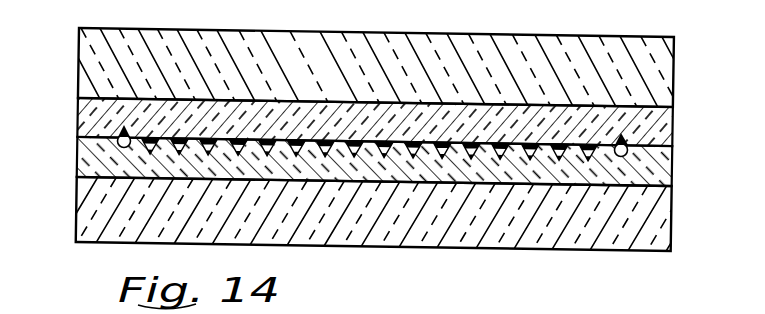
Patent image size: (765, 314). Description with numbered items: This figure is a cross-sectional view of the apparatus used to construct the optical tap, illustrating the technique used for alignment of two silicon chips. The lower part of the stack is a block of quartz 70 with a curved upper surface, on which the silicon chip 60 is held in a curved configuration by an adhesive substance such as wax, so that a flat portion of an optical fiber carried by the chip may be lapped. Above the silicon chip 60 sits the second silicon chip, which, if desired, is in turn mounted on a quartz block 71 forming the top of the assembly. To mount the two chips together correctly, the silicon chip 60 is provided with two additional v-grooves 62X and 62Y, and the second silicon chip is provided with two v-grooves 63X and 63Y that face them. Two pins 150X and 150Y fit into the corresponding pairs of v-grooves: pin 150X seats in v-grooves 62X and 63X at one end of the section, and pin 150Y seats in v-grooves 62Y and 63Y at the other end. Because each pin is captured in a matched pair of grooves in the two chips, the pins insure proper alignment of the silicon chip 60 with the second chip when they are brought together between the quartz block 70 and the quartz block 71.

The quartz block 71 is at (232, 42).
The block of quartz 70 is at (432, 236).
The silicon chip 60 is at (551, 182).
The v-groove 62X is at (127, 152).
The v-groove 62Y is at (638, 163).
The v-groove 63X is at (118, 131).
The v-groove 63Y is at (630, 140).
The pin 150X is at (121, 150).
The pin 150Y is at (674, 154).